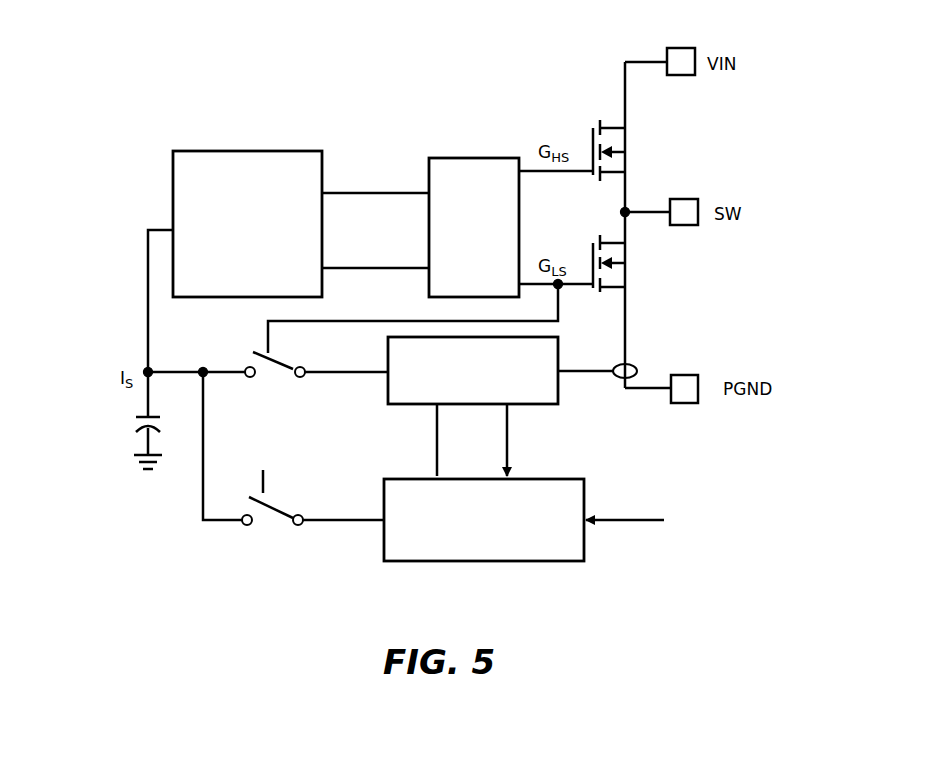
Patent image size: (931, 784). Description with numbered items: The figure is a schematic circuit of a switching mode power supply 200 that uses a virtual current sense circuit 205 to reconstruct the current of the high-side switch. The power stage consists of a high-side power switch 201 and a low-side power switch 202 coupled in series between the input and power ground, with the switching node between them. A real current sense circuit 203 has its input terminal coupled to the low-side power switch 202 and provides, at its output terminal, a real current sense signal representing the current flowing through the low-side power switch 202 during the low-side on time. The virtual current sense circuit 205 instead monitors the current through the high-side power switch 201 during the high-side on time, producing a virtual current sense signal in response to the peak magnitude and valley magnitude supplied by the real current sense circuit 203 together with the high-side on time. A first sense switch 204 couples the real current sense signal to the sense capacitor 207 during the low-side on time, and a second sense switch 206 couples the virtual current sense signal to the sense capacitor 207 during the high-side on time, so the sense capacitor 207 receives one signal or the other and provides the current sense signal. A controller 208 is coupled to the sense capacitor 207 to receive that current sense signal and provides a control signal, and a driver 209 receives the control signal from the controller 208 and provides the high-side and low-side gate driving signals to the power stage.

The switching mode power supply 200 is at (181, 116).
The high-side power switch 201 is at (630, 140).
The low-side power switch 202 is at (633, 272).
The real current sense circuit 203 is at (541, 384).
The first sense switch 204 is at (262, 380).
The virtual current sense circuit 205 is at (505, 566).
The second sense switch 206 is at (270, 533).
The sense capacitor 207 is at (130, 419).
The controller 208 is at (168, 175).
The driver 209 is at (427, 215).